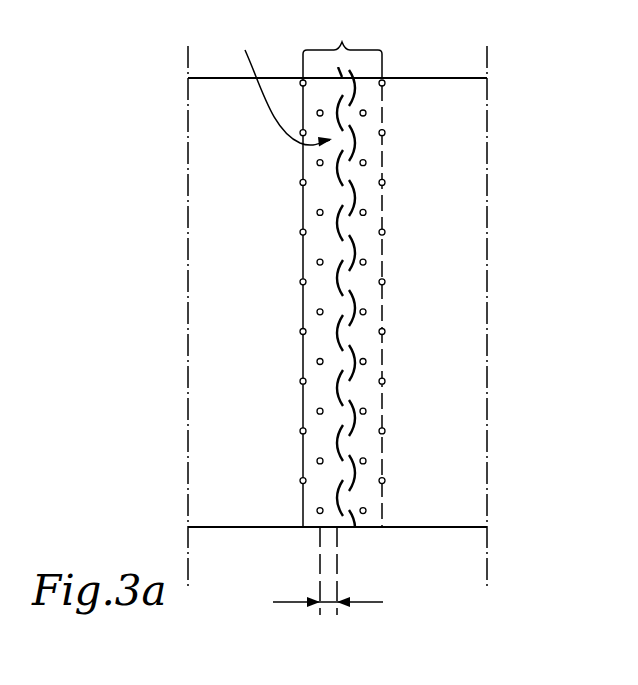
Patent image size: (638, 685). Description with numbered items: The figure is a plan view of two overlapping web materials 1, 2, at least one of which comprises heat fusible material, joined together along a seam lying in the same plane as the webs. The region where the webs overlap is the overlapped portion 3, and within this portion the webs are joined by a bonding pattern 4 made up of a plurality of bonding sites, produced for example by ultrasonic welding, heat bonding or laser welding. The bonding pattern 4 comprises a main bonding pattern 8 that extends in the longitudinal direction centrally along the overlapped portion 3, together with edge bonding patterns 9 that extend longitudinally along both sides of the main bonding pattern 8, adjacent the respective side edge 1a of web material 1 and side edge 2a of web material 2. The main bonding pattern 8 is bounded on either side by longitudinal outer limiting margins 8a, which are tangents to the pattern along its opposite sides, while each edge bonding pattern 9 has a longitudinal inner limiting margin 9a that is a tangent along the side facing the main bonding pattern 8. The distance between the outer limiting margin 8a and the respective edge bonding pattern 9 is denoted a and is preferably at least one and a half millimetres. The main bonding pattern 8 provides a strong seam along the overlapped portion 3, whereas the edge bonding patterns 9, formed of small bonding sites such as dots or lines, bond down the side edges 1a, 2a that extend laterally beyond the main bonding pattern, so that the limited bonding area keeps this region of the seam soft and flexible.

The web material 1 is at (222, 147).
The web material 2 is at (457, 180).
The overlapped portion 3 is at (342, 43).
The bonding pattern 4 is at (277, 85).
The main bonding pattern 8 is at (352, 248).
The edge bonding pattern 9 is at (320, 213).
The side edge 1a is at (382, 307).
The side edge 2a is at (300, 355).
The outer limiting margin 8a is at (337, 570).
The inner limiting margin 9a is at (320, 562).
The distance a is at (327, 603).